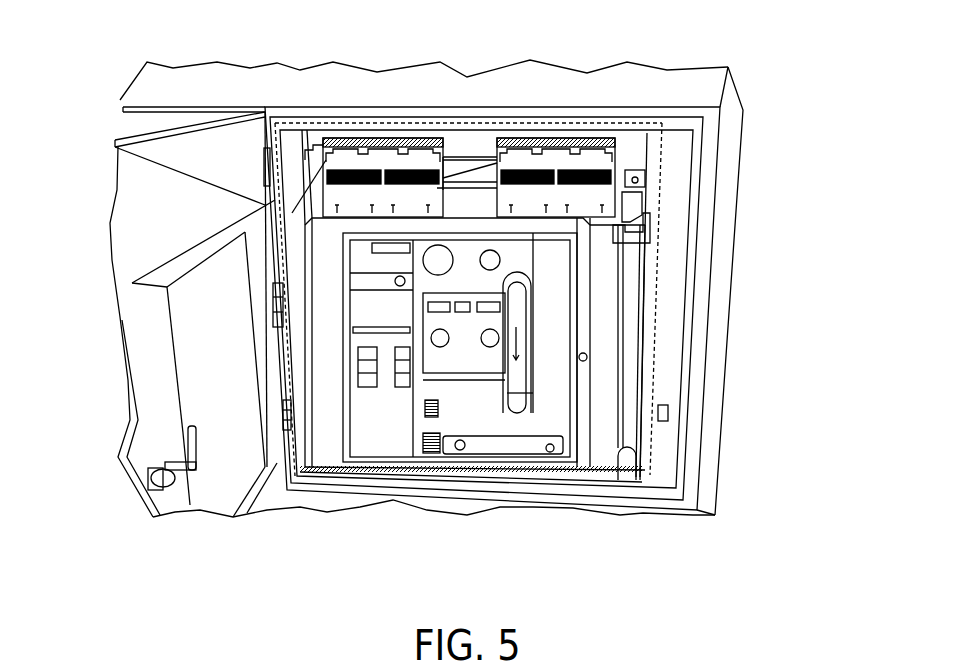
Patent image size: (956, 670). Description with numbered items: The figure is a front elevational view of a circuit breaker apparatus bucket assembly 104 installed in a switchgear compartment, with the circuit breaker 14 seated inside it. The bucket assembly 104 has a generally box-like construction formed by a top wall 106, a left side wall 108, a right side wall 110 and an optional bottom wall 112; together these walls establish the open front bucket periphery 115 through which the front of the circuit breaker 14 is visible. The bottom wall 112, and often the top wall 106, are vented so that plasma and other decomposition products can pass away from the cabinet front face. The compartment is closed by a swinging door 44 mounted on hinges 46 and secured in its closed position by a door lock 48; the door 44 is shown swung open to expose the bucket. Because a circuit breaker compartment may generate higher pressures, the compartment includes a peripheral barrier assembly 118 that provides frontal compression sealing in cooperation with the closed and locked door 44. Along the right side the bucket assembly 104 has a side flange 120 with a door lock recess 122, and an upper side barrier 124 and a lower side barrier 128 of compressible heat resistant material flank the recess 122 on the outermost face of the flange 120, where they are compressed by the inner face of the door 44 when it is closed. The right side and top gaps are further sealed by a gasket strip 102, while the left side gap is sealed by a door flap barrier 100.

The circuit breaker 14 is at (413, 440).
The door 44 is at (147, 220).
The hinges 46 is at (263, 183).
The door lock 48 is at (187, 500).
The door flap barrier 100 is at (120, 110).
The gasket strip 102 is at (672, 130).
The circuit breaker apparatus bucket assembly 104 is at (368, 537).
The top wall 106 is at (497, 127).
The left side wall 108 is at (290, 215).
The right side wall 110 is at (667, 412).
The bottom wall 112 is at (507, 475).
The open front bucket periphery 115 is at (645, 520).
The peripheral barrier assembly 118 is at (598, 107).
The side flange 120 is at (660, 237).
The door lock recess 122 is at (650, 323).
The upper side barrier 124 is at (667, 187).
The lower side barrier 128 is at (667, 415).